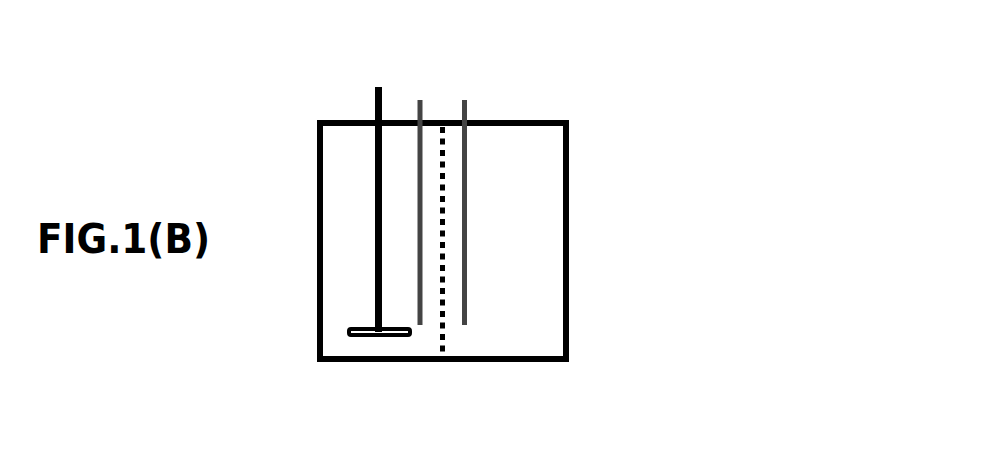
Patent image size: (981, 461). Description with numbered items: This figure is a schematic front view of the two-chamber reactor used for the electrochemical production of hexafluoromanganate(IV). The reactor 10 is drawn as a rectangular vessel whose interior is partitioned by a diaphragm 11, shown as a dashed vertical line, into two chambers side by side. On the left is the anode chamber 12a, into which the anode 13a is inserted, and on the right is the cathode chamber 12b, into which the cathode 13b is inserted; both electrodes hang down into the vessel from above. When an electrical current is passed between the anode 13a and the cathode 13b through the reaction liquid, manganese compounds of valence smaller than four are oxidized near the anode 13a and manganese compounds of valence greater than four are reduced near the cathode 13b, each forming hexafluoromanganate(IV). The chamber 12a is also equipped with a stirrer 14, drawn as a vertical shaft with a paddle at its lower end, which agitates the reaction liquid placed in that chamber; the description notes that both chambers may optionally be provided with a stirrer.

The reactor 10 is at (570, 118).
The diaphragm 11 is at (441, 345).
The anode chamber 12a is at (338, 276).
The cathode chamber 12b is at (547, 277).
The anode 13a is at (419, 100).
The cathode 13b is at (465, 100).
The stirrer 14 is at (378, 171).